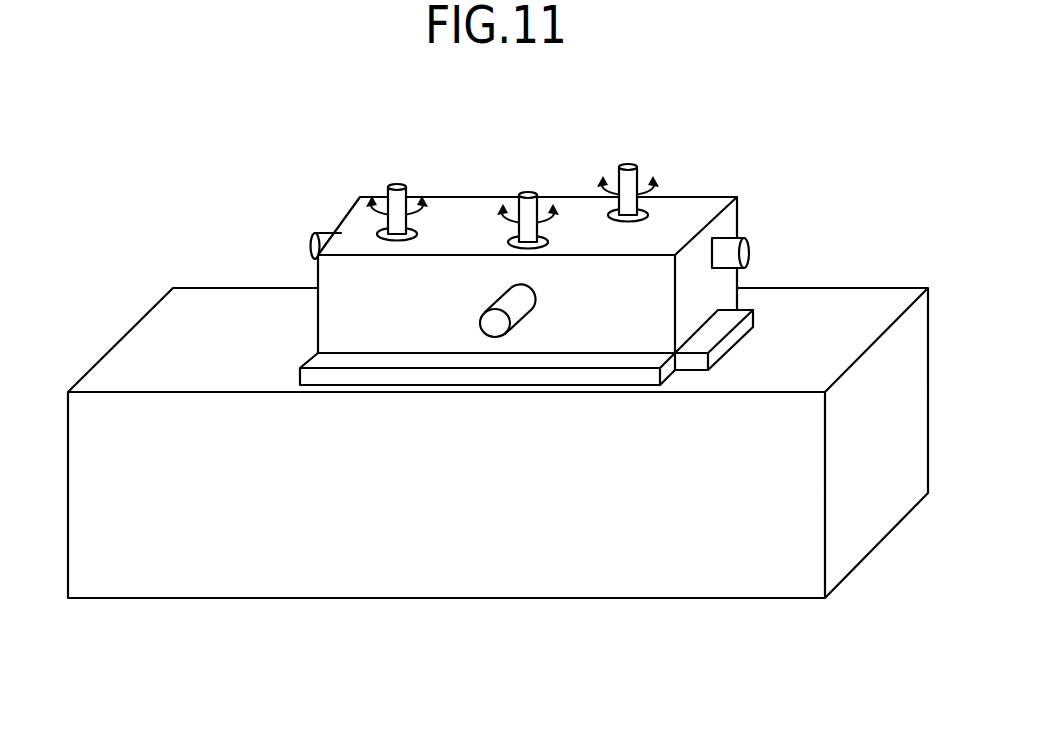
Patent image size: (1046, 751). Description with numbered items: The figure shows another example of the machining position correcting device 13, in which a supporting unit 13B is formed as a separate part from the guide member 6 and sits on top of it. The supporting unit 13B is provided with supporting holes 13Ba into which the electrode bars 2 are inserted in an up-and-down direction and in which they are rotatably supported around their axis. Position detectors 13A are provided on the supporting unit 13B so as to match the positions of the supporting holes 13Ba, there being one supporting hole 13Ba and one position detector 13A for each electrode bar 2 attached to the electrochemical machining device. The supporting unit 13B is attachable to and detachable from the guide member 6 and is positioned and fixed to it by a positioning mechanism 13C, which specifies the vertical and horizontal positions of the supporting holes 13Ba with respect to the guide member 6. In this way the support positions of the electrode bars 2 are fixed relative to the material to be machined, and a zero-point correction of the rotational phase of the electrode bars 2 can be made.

The electrode bar 2 is at (397, 184).
The guide member 6 is at (867, 538).
The machining position correcting device 13 is at (340, 183).
The position detector 13A is at (310, 247).
The supporting unit 13B is at (703, 212).
The supporting hole 13Ba is at (414, 236).
The positioning mechanism 13C is at (425, 377).